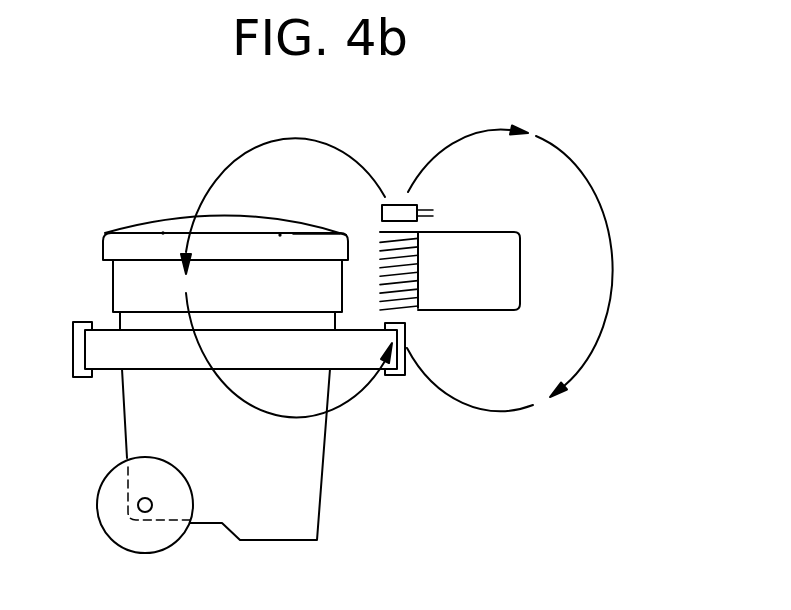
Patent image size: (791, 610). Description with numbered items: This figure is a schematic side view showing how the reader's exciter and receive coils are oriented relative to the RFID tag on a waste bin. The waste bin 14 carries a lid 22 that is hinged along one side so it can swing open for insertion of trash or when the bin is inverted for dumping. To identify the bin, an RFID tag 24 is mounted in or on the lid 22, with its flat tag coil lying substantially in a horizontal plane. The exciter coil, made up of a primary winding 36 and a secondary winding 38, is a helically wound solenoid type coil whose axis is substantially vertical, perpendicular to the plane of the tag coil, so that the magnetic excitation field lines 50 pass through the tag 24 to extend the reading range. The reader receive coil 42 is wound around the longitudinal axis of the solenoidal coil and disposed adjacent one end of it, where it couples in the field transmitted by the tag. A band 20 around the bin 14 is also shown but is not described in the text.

The waste bin 14 is at (268, 525).
The mounting band 20 is at (108, 358).
The lid 22 is at (140, 247).
The RFID tag 24 is at (245, 228).
The primary winding 36 is at (418, 262).
The secondary winding 38 is at (515, 233).
The receive coil 42 is at (418, 221).
The magnetic excitation field lines 50 is at (597, 192).